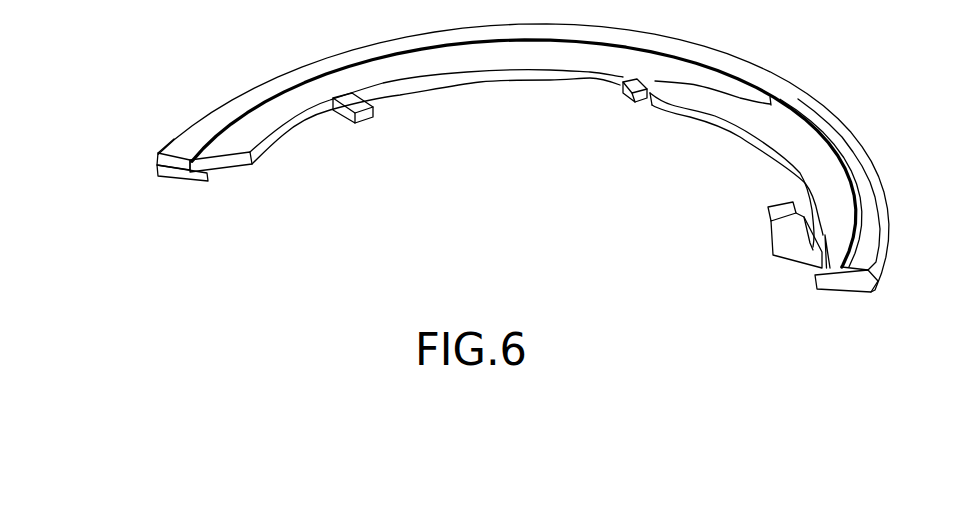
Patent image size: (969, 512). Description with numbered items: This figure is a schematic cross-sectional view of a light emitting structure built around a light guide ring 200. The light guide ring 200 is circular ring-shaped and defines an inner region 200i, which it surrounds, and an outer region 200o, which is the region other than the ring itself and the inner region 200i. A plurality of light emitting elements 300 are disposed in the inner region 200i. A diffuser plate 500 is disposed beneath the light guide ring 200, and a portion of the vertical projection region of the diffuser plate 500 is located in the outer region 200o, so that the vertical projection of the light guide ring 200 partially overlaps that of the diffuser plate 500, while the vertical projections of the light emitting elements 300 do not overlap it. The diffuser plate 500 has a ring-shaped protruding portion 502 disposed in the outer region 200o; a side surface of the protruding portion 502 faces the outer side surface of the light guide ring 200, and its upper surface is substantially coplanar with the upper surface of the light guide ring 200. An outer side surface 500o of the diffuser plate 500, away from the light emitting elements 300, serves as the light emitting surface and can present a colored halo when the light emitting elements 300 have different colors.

The light guide ring 200 is at (283, 140).
The inner region 200i is at (559, 190).
The outer region 200o is at (851, 28).
The light emitting elements 300 is at (362, 118).
The diffuser plate 500 is at (240, 92).
The outer side surface 500o is at (150, 152).
The protruding portion 502 is at (167, 170).